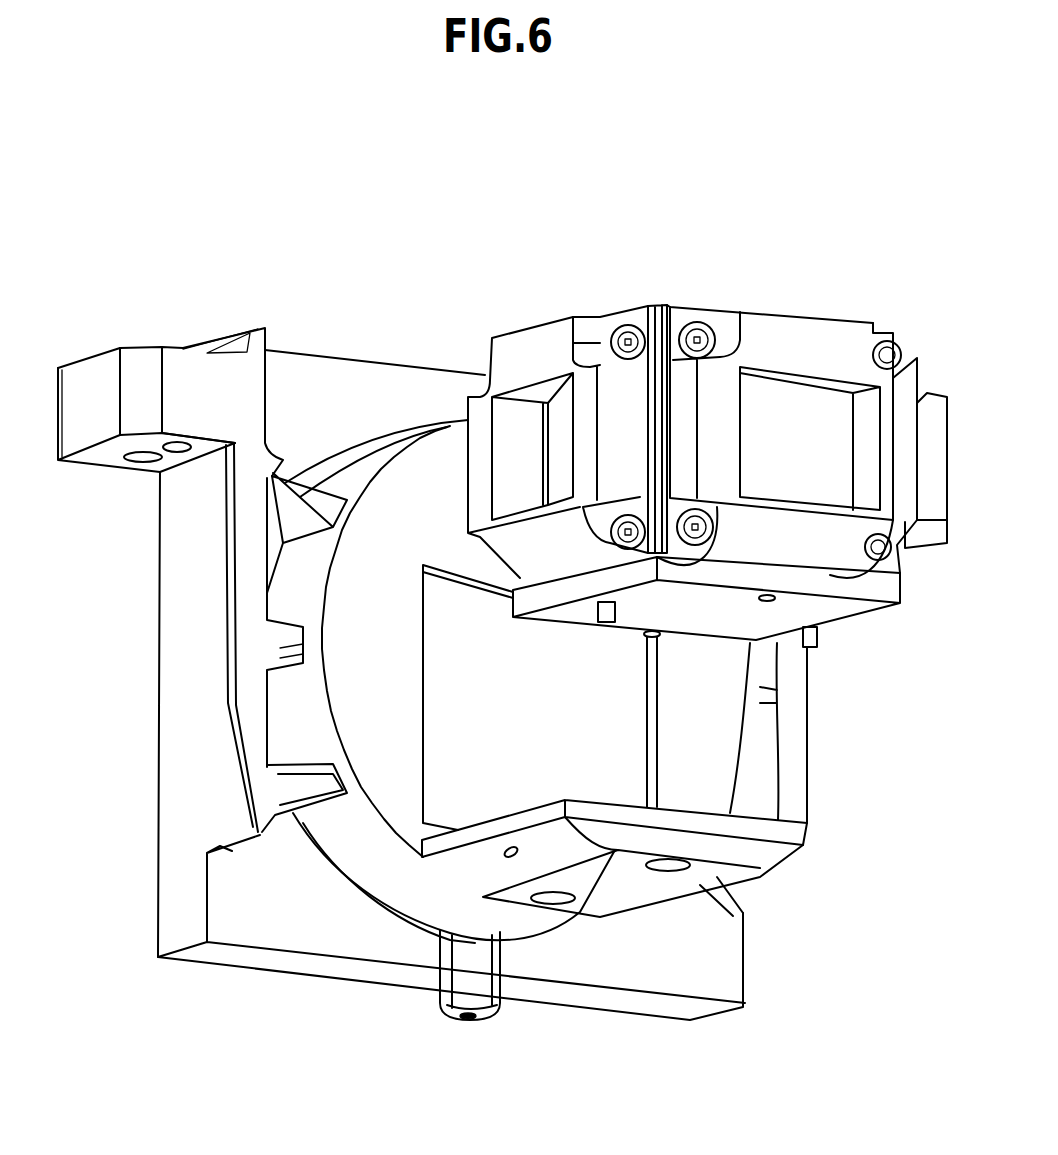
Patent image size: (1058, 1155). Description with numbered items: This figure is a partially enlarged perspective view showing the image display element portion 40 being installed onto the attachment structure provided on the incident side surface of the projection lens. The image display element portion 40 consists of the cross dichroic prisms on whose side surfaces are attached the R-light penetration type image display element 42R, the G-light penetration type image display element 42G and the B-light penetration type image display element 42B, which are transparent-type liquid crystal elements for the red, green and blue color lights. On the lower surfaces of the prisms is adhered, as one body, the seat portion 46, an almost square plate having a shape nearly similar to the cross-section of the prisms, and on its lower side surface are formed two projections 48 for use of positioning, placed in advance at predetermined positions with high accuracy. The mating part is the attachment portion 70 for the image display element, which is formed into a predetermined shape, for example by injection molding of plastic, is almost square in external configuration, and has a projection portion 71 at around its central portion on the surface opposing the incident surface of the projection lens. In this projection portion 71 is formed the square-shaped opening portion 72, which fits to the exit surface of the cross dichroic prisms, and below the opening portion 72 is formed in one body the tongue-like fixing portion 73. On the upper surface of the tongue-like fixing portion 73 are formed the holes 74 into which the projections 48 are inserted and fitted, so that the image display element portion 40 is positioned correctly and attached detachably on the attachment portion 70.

The image display element portion 40 is at (682, 300).
The R-light penetration type image display element 42R is at (557, 410).
The G-light penetration type image display element 42G is at (803, 420).
The B-light penetration type image display element 42B is at (928, 423).
The seat portion 46 is at (833, 585).
The projections for use of positioning 48 is at (613, 610).
The attachment portion for the image display element 70 is at (320, 352).
The projection portion 71 is at (353, 600).
The opening portion 72 is at (447, 747).
The tongue-like fixing portion 73 is at (740, 840).
The holes 74 is at (508, 852).